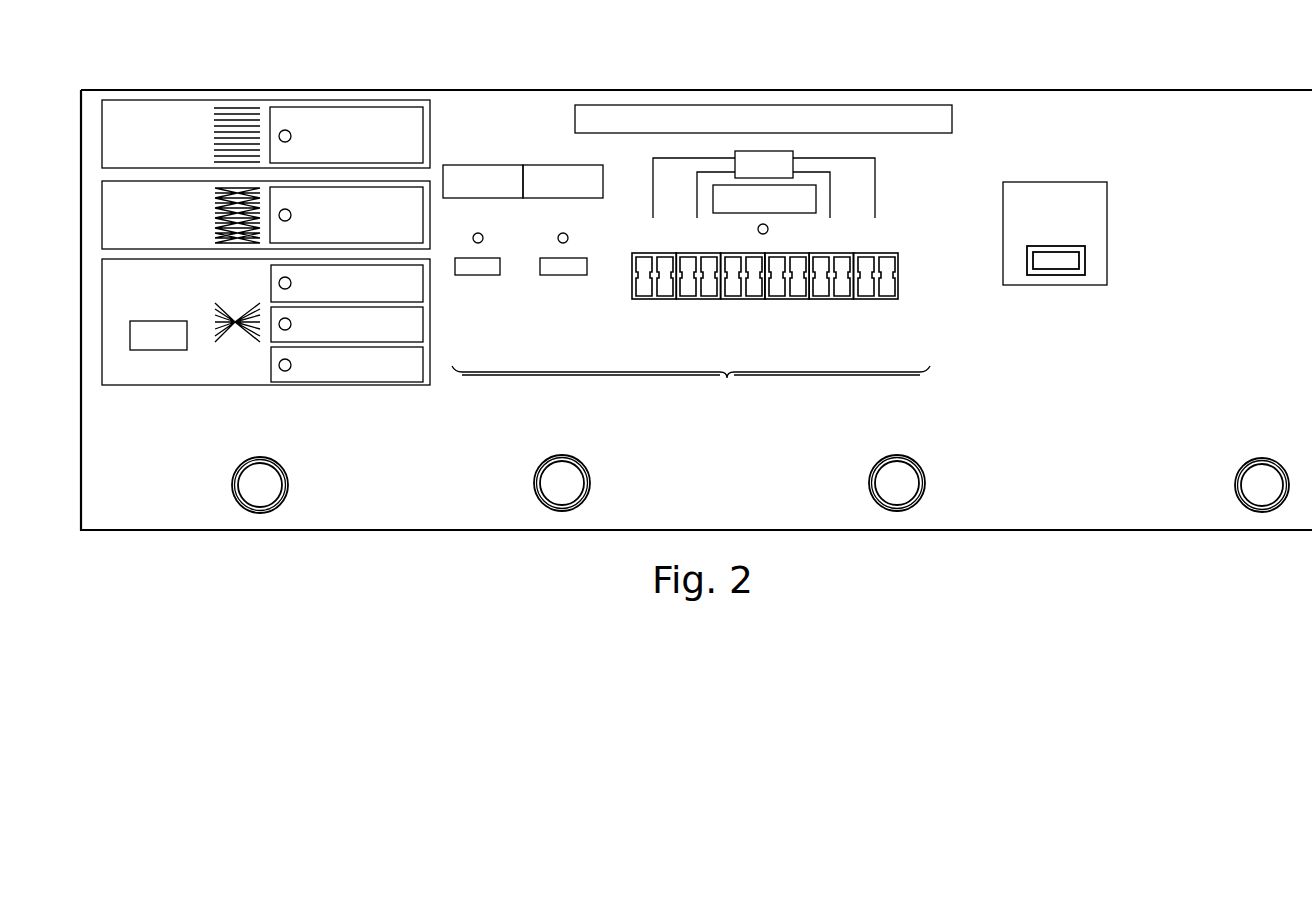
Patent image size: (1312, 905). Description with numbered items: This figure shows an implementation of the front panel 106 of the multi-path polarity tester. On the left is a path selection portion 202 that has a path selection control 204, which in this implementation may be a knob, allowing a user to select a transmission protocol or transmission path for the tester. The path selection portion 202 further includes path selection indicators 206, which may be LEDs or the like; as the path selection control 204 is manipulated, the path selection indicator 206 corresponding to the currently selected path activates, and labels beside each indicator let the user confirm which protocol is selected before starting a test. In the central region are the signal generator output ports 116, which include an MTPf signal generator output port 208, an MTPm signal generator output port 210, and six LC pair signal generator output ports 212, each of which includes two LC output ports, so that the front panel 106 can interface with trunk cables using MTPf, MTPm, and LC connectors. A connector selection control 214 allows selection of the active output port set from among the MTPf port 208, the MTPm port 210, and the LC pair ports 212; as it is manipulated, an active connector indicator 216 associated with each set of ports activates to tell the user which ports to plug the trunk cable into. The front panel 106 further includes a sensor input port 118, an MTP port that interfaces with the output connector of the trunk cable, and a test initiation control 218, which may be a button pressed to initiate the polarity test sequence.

The front panel 106 is at (853, 90).
The signal generator output ports 116 is at (691, 282).
The sensor input port 118 is at (1055, 287).
The path selection portion 202 is at (160, 400).
The path selection control 204 is at (233, 481).
The path selection indicators 206 is at (282, 130).
The MTPf signal generator output port 208 is at (466, 277).
The MTPm signal generator output port 210 is at (551, 277).
The LC pair signal generator output ports 212 is at (884, 323).
The connector selection control 214 is at (534, 482).
The active connector indicator 216 is at (480, 233).
The test initiation control 218 is at (1236, 484).